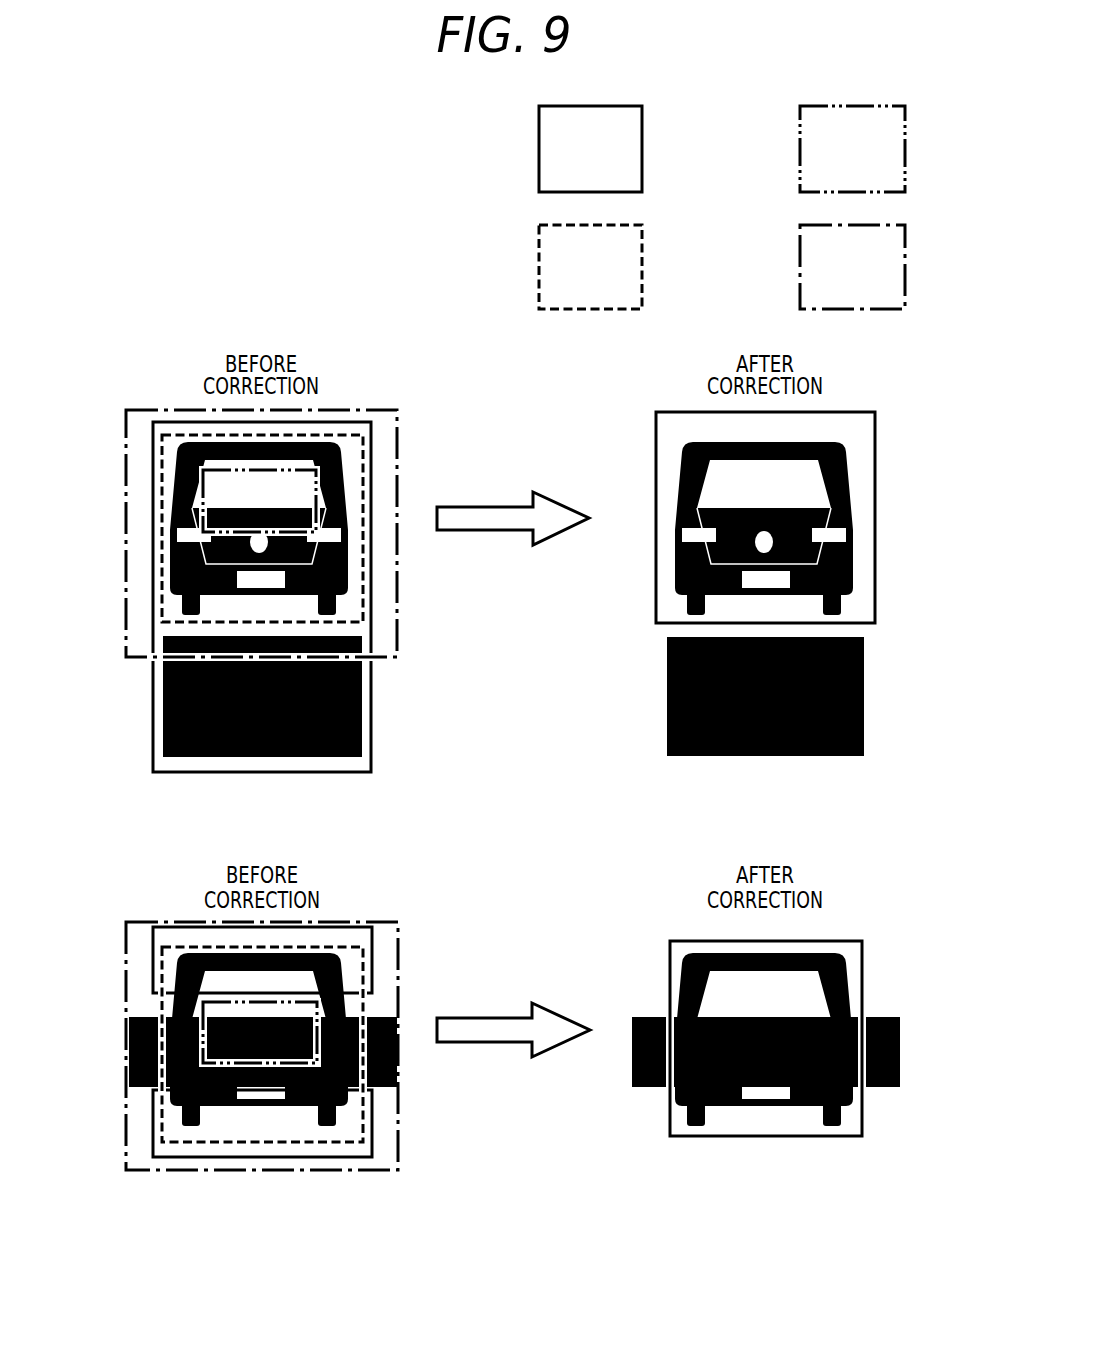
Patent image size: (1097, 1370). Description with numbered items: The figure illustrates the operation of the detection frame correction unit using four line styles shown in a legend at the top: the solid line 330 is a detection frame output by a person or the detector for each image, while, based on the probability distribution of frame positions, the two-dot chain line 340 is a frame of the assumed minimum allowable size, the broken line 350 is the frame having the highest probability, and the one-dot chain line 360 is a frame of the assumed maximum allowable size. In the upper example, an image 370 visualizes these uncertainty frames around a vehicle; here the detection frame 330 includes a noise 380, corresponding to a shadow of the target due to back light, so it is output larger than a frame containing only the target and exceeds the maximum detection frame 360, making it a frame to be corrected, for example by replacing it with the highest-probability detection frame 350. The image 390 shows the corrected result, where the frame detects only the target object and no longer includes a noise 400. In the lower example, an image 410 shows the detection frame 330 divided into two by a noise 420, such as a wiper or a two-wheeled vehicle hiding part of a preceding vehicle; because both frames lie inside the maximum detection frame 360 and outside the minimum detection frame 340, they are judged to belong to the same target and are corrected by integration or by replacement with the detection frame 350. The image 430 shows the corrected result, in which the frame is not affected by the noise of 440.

The detection frame 330 is at (539, 150).
The assumed minimum size detection frame 340 is at (800, 150).
The highest probability detection frame 350 is at (539, 263).
The assumed maximum size detection frame 360 is at (800, 263).
The image 370 is at (126, 510).
The noise 380 is at (362, 714).
The image 390 is at (875, 471).
The noise 400 is at (866, 695).
The image 410 is at (126, 972).
The noise 420 is at (138, 1087).
The image 430 is at (862, 972).
The noise 440 is at (887, 1087).